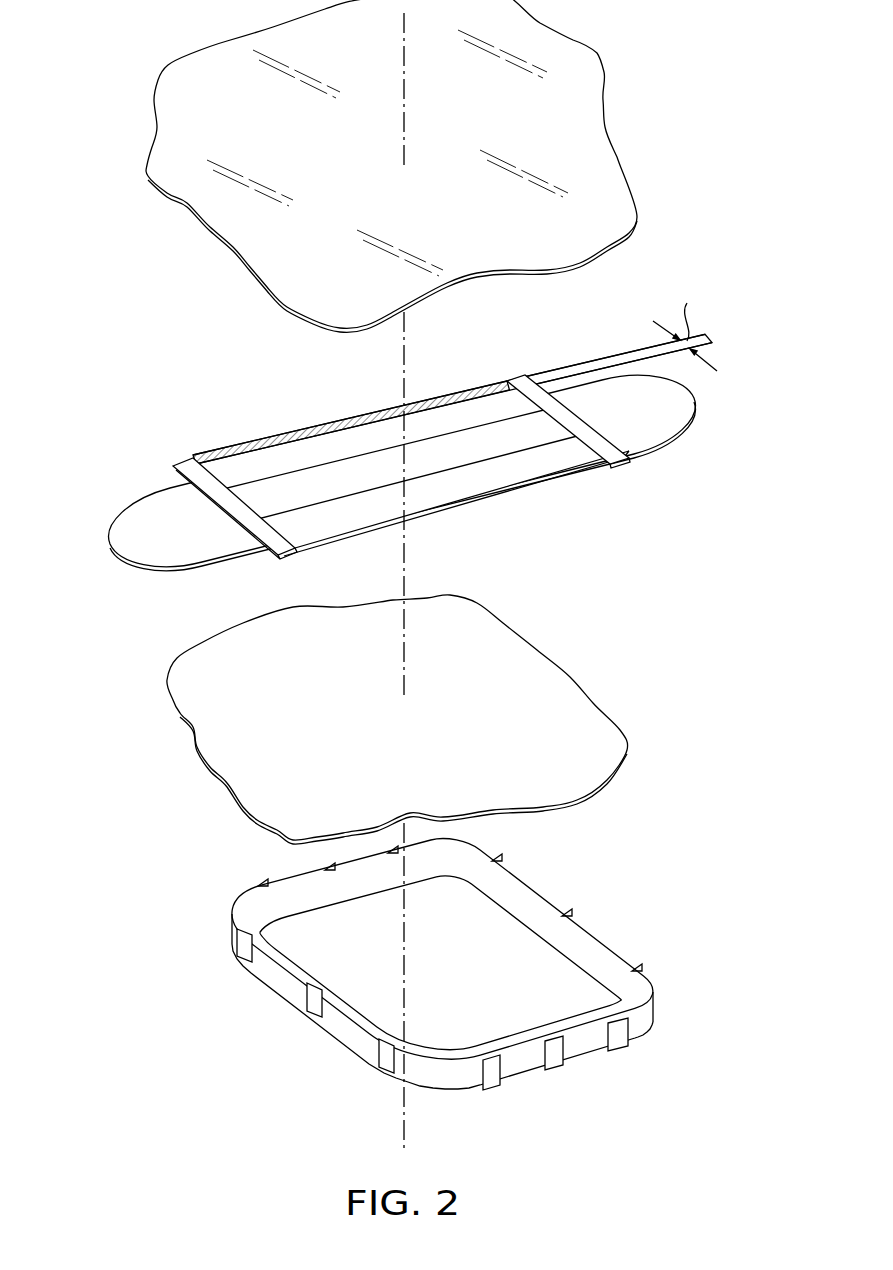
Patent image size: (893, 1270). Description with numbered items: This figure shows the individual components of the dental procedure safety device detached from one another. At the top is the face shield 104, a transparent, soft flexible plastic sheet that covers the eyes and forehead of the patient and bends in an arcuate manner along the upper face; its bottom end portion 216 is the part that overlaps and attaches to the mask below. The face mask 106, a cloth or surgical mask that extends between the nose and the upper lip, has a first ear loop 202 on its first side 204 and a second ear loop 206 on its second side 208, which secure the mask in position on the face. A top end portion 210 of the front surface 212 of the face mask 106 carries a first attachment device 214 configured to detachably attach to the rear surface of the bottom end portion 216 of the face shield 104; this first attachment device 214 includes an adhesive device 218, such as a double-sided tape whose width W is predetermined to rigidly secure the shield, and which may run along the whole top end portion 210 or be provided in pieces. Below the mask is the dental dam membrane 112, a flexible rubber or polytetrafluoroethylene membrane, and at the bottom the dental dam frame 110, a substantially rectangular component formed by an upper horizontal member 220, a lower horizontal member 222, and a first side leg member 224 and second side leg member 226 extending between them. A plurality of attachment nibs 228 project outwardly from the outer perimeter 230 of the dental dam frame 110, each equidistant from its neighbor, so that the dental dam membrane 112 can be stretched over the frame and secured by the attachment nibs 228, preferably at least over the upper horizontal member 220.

The face shield 104 is at (426, 166).
The bottom end portion 216 is at (587, 238).
The face mask 106 is at (399, 424).
The first ear loop 202 is at (399, 472).
The first side 204 is at (115, 547).
The second ear loop 206 is at (646, 446).
The second side 208 is at (583, 417).
The top end portion 210 is at (189, 472).
The front surface 212 is at (266, 465).
The first attachment device 214 is at (470, 390).
The adhesive device 218 is at (444, 391).
The dental dam membrane 112 is at (177, 667).
The dental dam frame 110 is at (389, 986).
The upper horizontal member 220 is at (413, 951).
The lower horizontal member 222 is at (587, 1024).
The first side leg member 224 is at (293, 953).
The second side leg member 226 is at (583, 937).
The attachment nibs 228 is at (377, 1063).
The outer perimeter 230 is at (447, 1024).